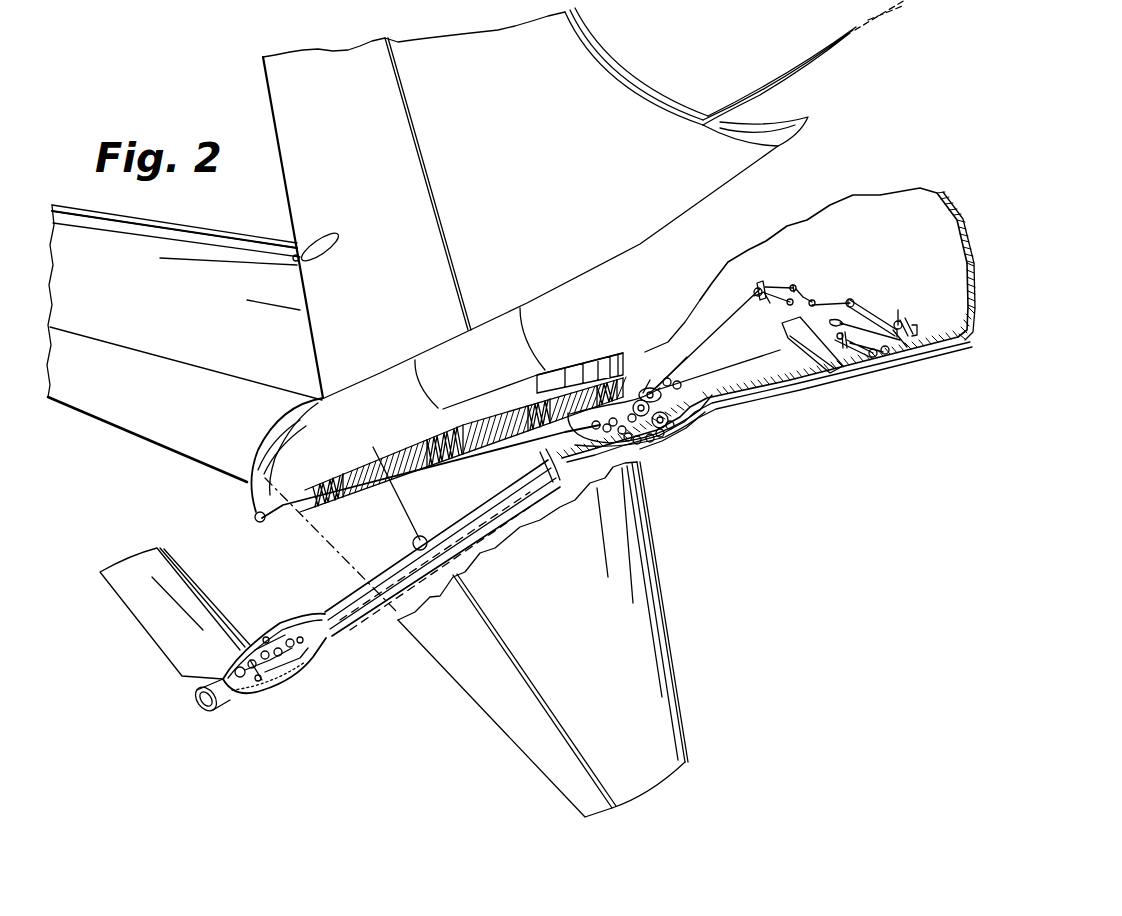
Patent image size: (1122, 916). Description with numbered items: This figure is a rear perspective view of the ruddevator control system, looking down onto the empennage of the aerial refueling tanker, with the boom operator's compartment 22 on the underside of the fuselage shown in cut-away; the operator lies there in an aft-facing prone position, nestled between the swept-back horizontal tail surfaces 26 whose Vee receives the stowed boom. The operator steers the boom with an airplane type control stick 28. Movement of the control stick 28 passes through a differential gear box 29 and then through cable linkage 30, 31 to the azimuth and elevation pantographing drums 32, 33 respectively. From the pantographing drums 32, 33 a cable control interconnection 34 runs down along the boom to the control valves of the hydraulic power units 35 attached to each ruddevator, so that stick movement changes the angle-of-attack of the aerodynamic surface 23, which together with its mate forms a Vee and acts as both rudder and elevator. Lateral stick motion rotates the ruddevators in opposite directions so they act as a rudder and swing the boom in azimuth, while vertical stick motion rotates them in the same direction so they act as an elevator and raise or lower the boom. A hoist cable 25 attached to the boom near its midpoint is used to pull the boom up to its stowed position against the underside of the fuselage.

The operator's compartment 22 is at (866, 269).
The aerodynamic surface (ruddevator) 23 is at (162, 569).
The hoist cable 25 is at (414, 535).
The swept-back horizontal tail surfaces 26 is at (196, 317).
The control stick 28 is at (878, 316).
The differential gear box 29 is at (912, 325).
The cable linkage 30 is at (727, 369).
The cable linkage 31 is at (660, 387).
The azimuth pantographing drum 32 is at (637, 398).
The elevation pantographing drum 33 is at (632, 410).
The cable control interconnection 34 is at (470, 548).
The hydraulic power unit 35 is at (303, 668).